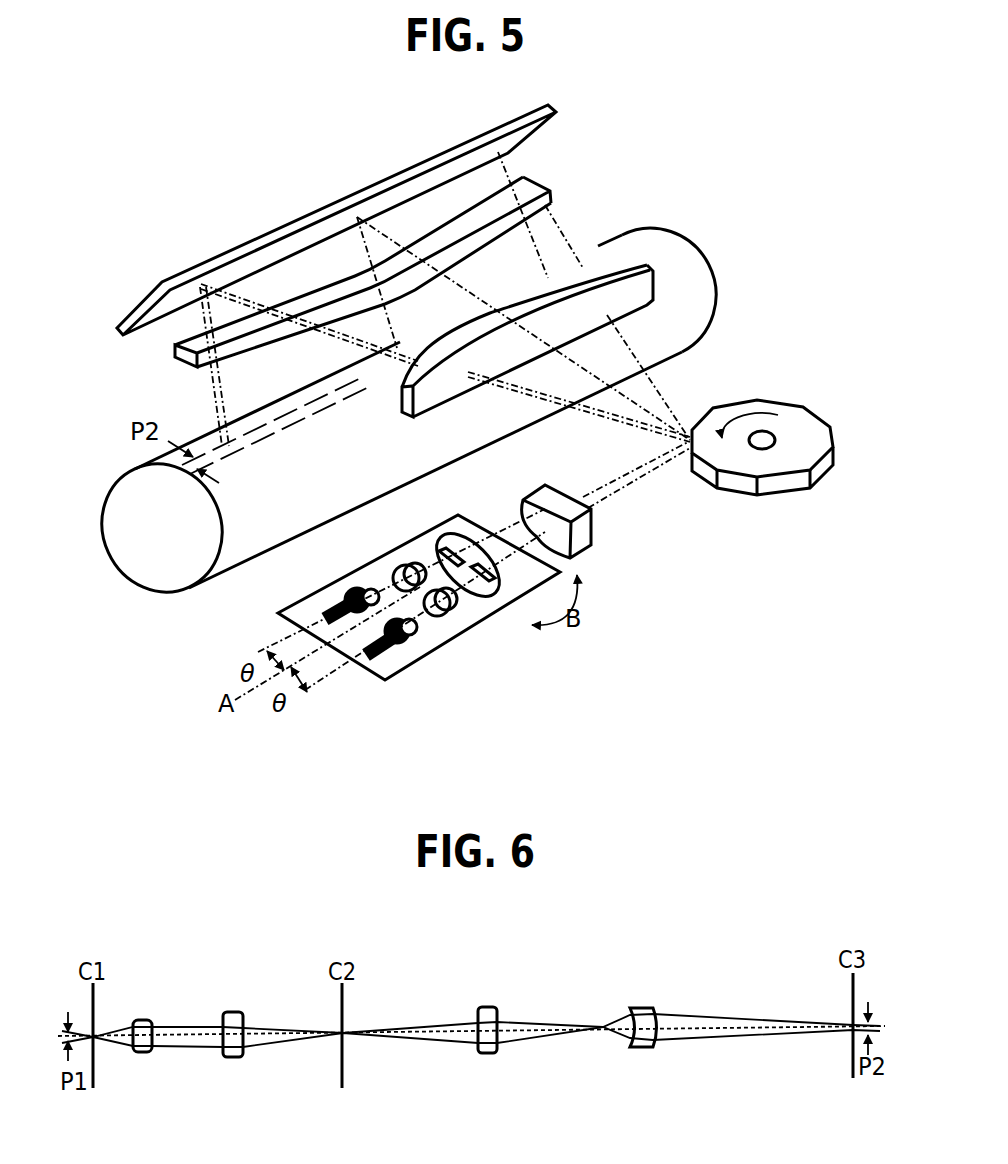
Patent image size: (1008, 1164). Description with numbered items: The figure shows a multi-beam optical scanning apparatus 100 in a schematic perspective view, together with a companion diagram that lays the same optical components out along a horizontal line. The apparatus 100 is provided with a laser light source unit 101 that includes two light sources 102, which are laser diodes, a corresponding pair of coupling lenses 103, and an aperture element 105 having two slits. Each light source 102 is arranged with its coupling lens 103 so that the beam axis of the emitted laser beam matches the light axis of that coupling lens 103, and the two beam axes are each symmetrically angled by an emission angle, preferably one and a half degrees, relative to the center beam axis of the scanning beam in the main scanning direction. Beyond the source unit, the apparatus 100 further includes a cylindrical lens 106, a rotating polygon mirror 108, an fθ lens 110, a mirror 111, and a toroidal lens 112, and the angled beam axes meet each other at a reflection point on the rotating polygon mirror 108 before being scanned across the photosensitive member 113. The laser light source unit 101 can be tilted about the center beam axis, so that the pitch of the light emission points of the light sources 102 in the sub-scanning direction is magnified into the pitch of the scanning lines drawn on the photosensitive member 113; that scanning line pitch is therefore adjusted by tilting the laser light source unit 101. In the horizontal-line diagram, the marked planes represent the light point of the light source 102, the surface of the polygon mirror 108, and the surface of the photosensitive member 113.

In FIG. 5, the multi-beam optical scanning apparatus 100 is at (204, 152).
In FIG. 5, the laser light source unit 101 is at (262, 624).
In FIG. 5, the light source 102 is at (342, 602).
In FIG. 5, the coupling lens 103 is at (407, 565).
In FIG. 6, the coupling lens 103 is at (142, 1052).
In FIG. 5, the aperture element 105 is at (478, 532).
In FIG. 5, the cylindrical lens 106 is at (598, 525).
In FIG. 6, the cylindrical lens 106 is at (233, 1057).
In FIG. 5, the rotating polygon mirror 108 is at (791, 406).
In FIG. 5, the fθ lens 110 is at (636, 265).
In FIG. 6, the fθ lens 110 is at (487, 1053).
In FIG. 5, the mirror 111 is at (432, 165).
In FIG. 5, the toroidal lens 112 is at (545, 190).
In FIG. 6, the toroidal lens 112 is at (640, 1047).
In FIG. 5, the photosensitive member 113 is at (700, 268).